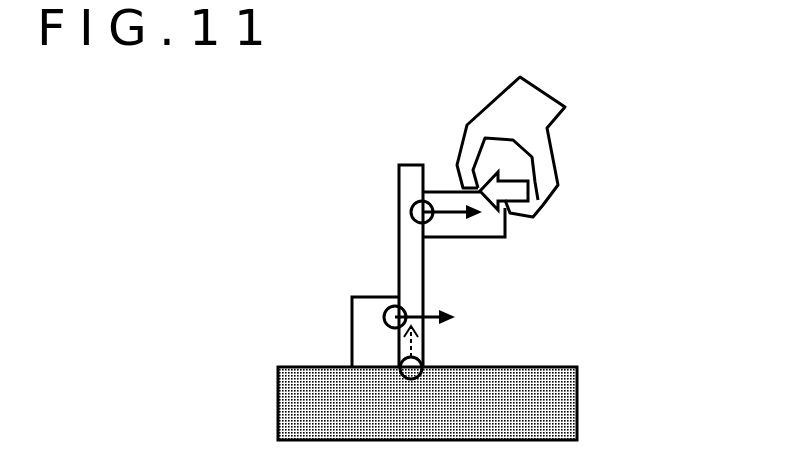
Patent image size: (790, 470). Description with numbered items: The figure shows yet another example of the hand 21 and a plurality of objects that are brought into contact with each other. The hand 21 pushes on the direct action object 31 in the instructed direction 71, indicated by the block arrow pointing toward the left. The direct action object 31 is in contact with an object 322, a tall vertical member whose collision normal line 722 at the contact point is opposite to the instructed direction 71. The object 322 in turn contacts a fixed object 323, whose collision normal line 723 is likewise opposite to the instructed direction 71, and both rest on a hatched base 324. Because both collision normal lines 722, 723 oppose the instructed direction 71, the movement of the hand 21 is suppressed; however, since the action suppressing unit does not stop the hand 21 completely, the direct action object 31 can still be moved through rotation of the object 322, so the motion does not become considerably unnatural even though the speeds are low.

The hand 21 is at (548, 145).
The direct action object 31 is at (440, 190).
The instructed direction 71 is at (528, 192).
The object 322 is at (399, 265).
The fixed object 323 is at (352, 329).
The base 324 is at (577, 410).
The collision normal line 722 is at (445, 218).
The collision normal line 723 is at (427, 310).